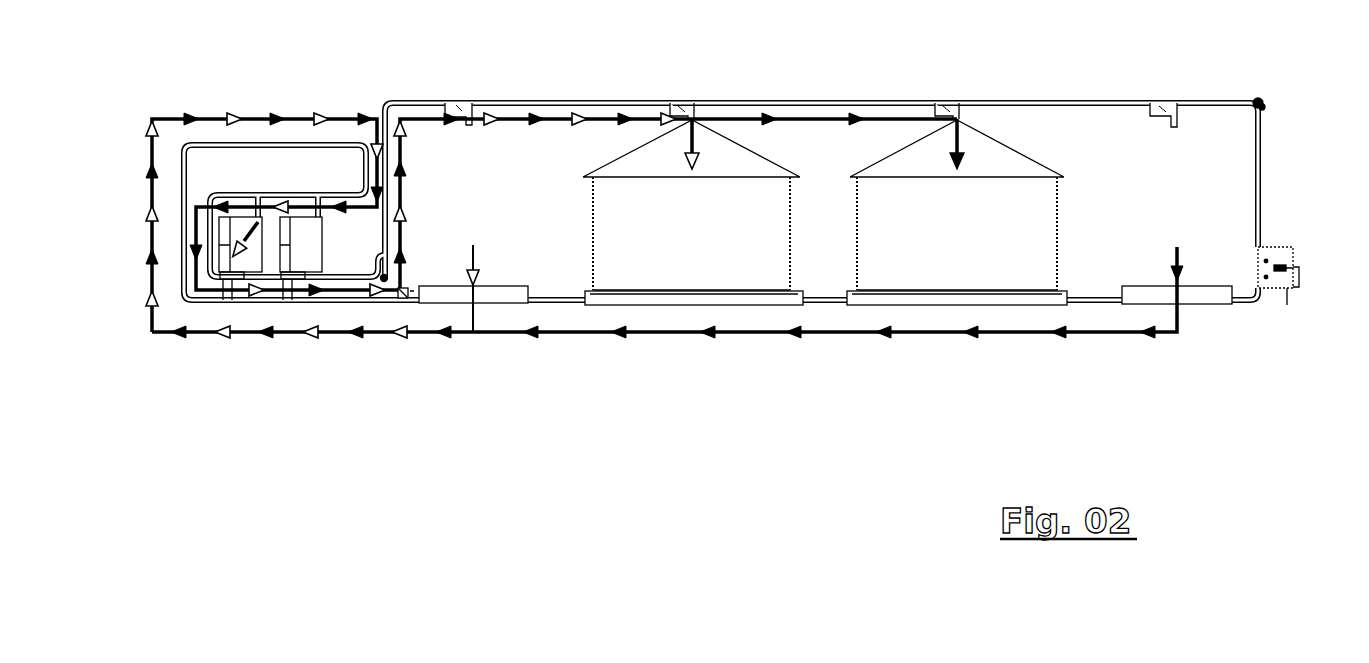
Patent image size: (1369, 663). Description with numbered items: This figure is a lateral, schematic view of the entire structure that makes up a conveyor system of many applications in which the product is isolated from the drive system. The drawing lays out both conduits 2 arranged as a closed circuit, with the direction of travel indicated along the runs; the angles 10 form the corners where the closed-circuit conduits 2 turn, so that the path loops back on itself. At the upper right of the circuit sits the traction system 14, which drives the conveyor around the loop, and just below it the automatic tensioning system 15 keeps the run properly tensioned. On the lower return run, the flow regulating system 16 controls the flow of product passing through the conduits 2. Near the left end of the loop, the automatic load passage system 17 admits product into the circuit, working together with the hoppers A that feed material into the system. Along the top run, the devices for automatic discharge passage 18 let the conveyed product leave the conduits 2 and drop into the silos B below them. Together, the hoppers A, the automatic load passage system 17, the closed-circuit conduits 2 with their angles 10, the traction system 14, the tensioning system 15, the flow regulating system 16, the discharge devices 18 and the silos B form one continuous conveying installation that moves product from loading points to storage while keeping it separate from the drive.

The conduits 2 is at (615, 103).
The angles 10 is at (186, 147).
The traction system 14 is at (1265, 100).
The automatic tensioning system 15 is at (1283, 262).
The flow regulating system 16 is at (403, 297).
The automatic load passage system 17 is at (293, 280).
The devices for automatic discharge passage 18 is at (960, 104).
The hoppers A is at (458, 297).
The silos B is at (910, 208).